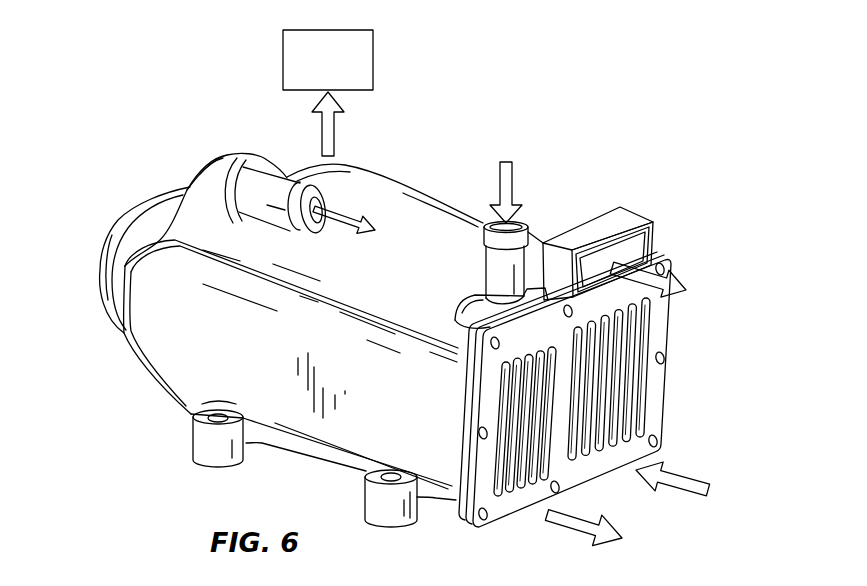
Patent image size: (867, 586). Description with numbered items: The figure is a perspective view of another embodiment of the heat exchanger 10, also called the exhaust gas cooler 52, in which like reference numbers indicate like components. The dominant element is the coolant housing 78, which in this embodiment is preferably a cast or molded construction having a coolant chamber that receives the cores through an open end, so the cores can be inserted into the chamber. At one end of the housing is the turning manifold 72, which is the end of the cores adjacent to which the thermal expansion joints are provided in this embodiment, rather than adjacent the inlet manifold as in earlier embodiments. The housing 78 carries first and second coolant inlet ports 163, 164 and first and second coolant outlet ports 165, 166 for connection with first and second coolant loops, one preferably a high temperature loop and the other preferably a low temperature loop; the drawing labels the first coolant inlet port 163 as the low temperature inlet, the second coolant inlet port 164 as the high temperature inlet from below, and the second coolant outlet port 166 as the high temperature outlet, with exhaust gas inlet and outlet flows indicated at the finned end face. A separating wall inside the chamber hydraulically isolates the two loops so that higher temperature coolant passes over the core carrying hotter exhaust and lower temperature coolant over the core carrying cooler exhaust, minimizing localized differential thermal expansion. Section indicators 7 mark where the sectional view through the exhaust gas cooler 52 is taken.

The heat exchanger 10 is at (98, 122).
The exhaust gas cooler 52 is at (427, 295).
The section line 7 is at (60, 208).
The turning manifold 72 is at (137, 196).
The coolant housing 78 is at (383, 177).
The first coolant inlet port 163 is at (527, 223).
The second coolant inlet port 164 is at (283, 72).
The first coolant outlet port 165 is at (277, 177).
The second coolant outlet port 166 is at (628, 257).